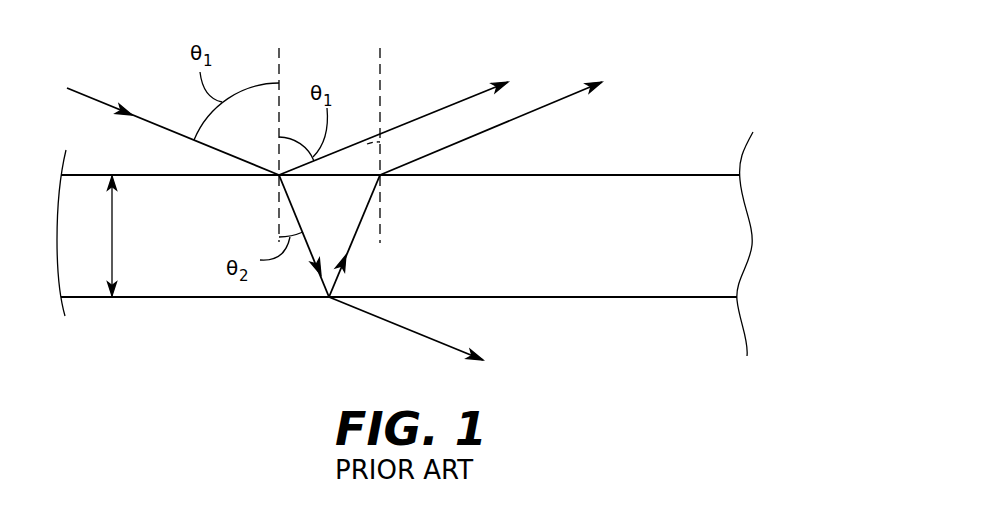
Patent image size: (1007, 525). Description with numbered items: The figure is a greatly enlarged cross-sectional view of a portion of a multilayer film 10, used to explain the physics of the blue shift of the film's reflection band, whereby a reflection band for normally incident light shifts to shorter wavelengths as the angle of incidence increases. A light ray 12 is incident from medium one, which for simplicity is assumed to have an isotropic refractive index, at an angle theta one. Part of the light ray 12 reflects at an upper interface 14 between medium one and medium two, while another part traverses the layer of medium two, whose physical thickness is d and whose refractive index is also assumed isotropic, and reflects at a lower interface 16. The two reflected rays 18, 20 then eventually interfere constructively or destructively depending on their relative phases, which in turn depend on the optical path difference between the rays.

The multilayer film 10 is at (436, 193).
The light ray 12 is at (87, 93).
The upper interface 14 is at (706, 175).
The lower interface 16 is at (705, 297).
The reflected ray 18 is at (443, 105).
The reflected ray 20 is at (510, 123).